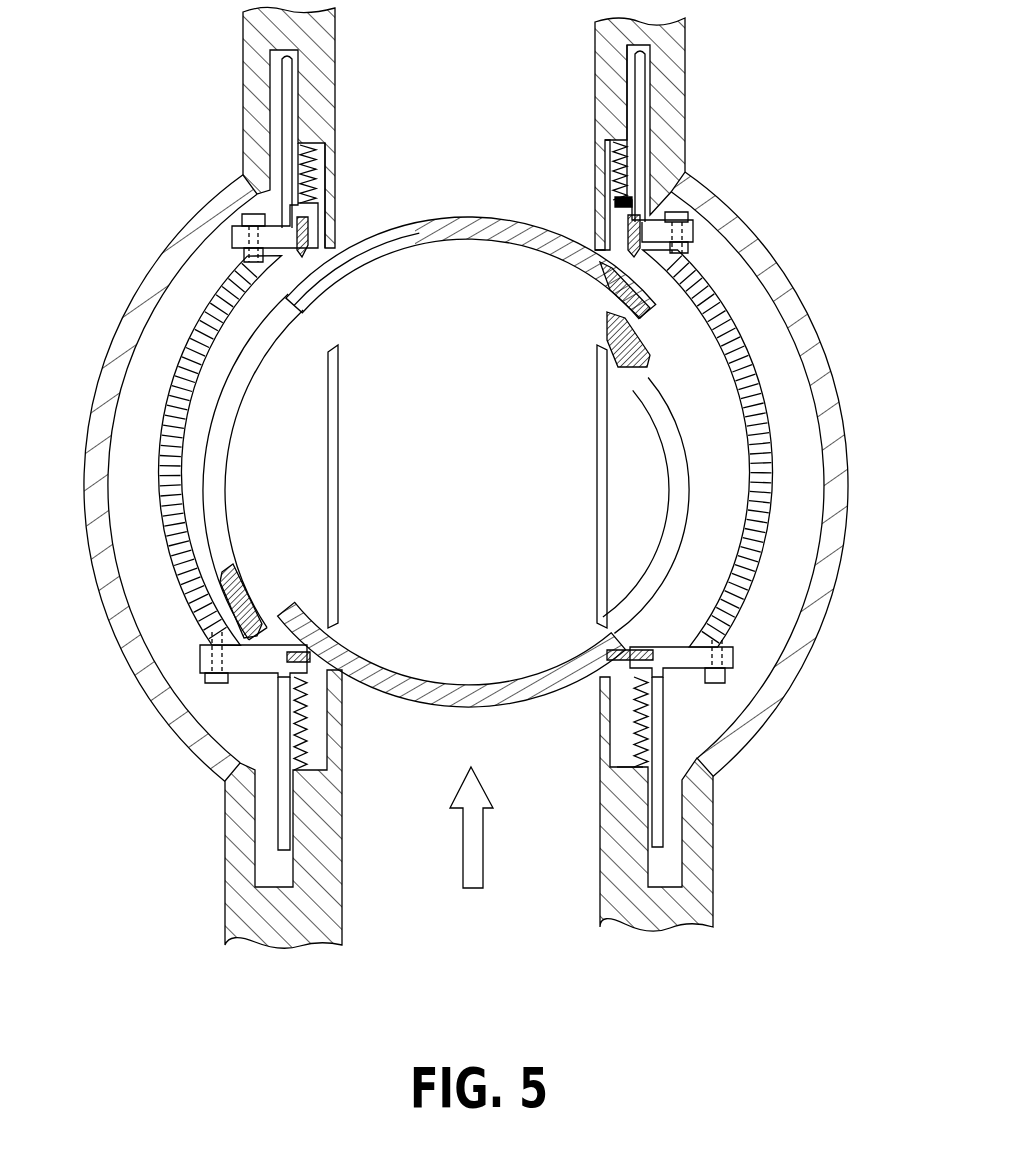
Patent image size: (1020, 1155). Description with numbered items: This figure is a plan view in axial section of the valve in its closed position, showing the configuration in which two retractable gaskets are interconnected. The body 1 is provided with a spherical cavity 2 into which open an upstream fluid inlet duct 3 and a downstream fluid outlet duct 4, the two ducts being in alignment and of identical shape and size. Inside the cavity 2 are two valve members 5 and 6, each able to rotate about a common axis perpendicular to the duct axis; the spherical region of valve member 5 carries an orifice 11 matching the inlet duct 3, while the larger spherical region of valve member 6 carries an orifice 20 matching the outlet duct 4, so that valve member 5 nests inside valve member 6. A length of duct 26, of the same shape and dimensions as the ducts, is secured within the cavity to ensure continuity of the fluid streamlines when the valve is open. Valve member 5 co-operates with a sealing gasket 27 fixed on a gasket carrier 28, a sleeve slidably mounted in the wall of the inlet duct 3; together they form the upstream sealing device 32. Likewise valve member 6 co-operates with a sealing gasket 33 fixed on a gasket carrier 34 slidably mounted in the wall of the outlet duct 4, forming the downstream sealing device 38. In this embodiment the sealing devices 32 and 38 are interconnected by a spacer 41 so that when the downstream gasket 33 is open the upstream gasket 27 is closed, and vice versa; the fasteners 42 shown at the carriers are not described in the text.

The body 1 is at (843, 473).
The spherical cavity 2 is at (480, 438).
The upstream fluid inlet duct 3 is at (546, 896).
The downstream fluid outlet duct 4 is at (472, 88).
The valve member 5 is at (435, 690).
The valve member 6 is at (418, 232).
The orifice 11 is at (670, 453).
The orifice 20 is at (220, 433).
The length of duct 26 is at (333, 413).
The sealing gasket 27 is at (617, 653).
The gasket carrier 28 is at (638, 90).
The sealing device 32 is at (676, 684).
The sealing gasket 33 is at (617, 252).
The gasket carrier 34 is at (660, 830).
The sealing device 38 is at (650, 196).
The spacer 41 is at (197, 327).
The bolt 42 is at (690, 175).